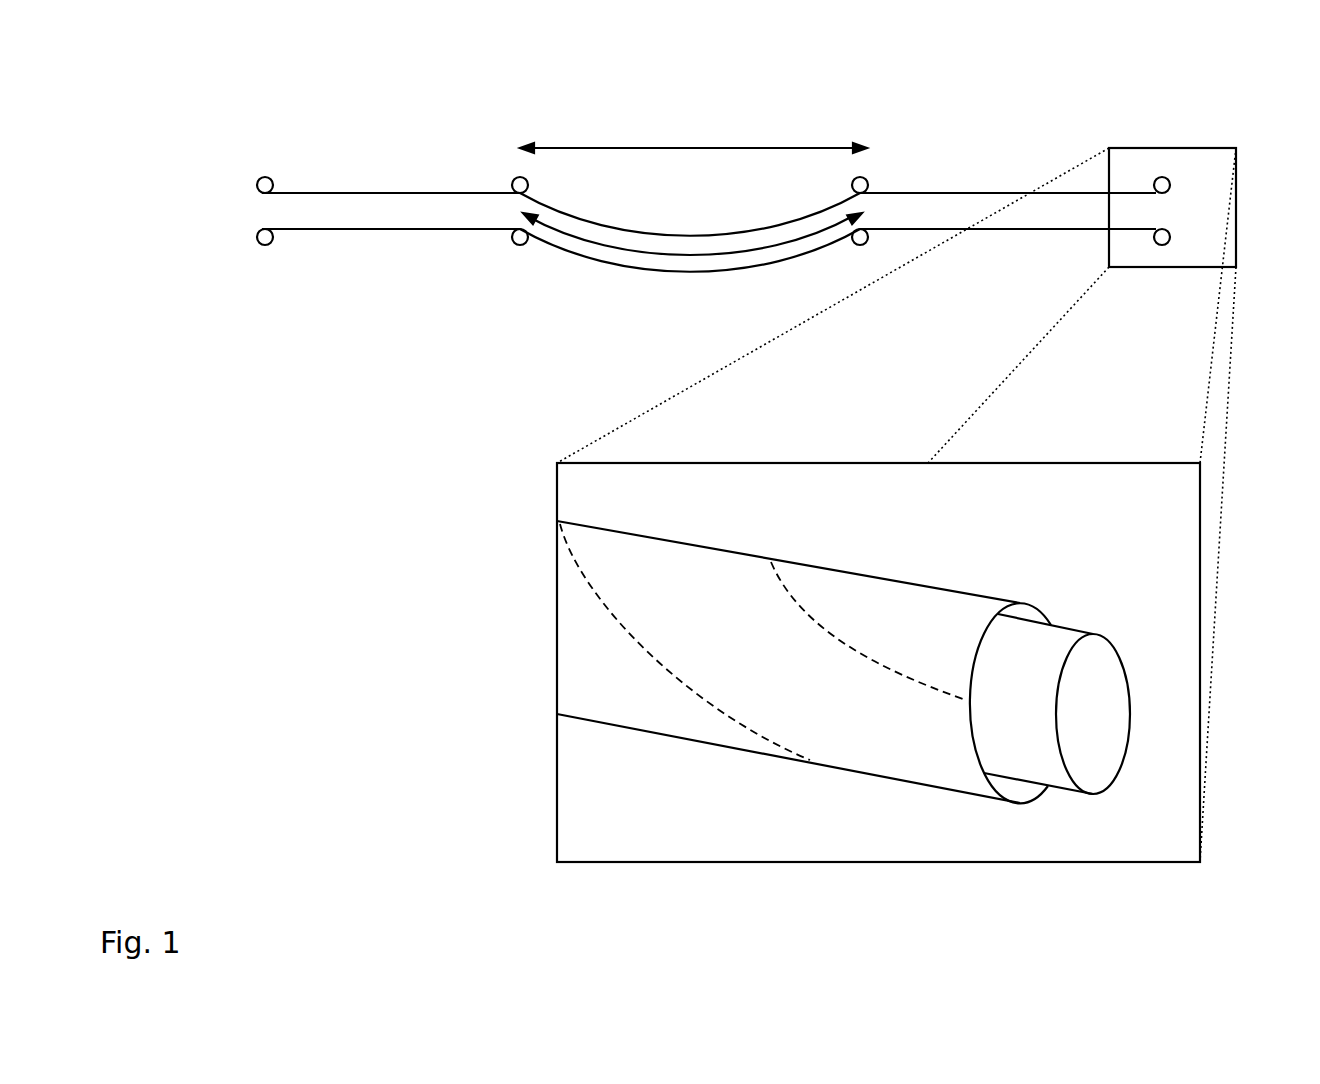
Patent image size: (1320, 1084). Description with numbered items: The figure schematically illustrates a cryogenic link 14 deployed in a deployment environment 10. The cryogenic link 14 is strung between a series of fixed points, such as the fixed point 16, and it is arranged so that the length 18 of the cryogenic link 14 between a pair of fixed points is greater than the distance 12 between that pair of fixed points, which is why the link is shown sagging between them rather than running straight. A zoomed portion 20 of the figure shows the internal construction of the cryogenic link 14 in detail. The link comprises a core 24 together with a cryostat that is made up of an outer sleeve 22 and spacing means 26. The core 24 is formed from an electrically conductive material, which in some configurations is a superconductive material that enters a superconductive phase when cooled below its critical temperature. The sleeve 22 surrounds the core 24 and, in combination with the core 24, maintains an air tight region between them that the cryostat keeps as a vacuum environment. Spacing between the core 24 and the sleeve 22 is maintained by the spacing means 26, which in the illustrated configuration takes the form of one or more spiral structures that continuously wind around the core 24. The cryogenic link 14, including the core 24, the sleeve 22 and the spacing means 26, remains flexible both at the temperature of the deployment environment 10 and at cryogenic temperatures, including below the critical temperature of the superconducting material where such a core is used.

The deployment environment 10 is at (1203, 153).
The distance 12 is at (693, 131).
The cryogenic link 14 is at (388, 199).
The fixed point 16 is at (834, 196).
The length 18 is at (691, 257).
The zoomed portion 20 is at (929, 505).
The outer sleeve 22 is at (814, 662).
The core 24 is at (1072, 692).
The spacing means 26 is at (910, 631).